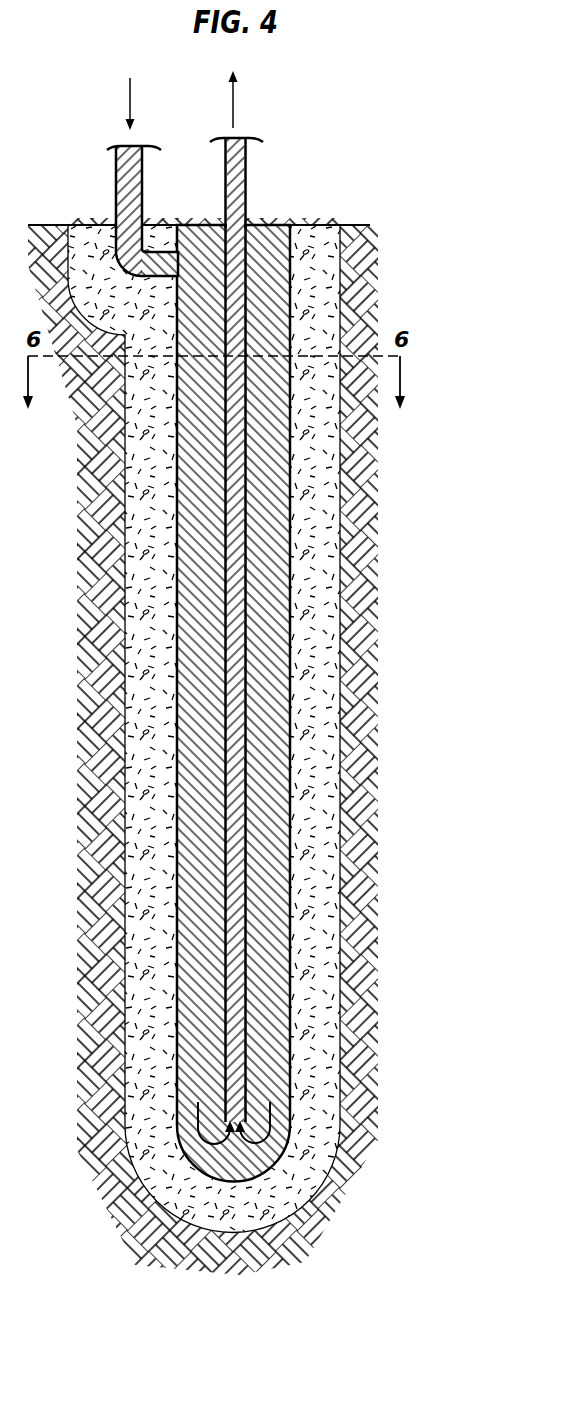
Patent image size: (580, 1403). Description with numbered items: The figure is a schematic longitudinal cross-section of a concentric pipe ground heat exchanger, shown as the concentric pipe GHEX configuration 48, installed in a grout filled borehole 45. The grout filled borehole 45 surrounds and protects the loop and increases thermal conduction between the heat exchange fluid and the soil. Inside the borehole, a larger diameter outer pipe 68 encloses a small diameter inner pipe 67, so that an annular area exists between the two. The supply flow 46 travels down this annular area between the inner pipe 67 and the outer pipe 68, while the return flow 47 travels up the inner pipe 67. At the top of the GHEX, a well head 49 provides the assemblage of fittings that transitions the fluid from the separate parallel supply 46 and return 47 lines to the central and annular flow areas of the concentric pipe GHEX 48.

The grout filled borehole 45 is at (127, 972).
The supply flow 46 is at (117, 178).
The return flow 47 is at (247, 170).
The concentric pipe GHEX configuration 48 is at (177, 713).
The well head 49 is at (416, 252).
The inner pipe 67 is at (247, 638).
The outer pipe 68 is at (292, 752).